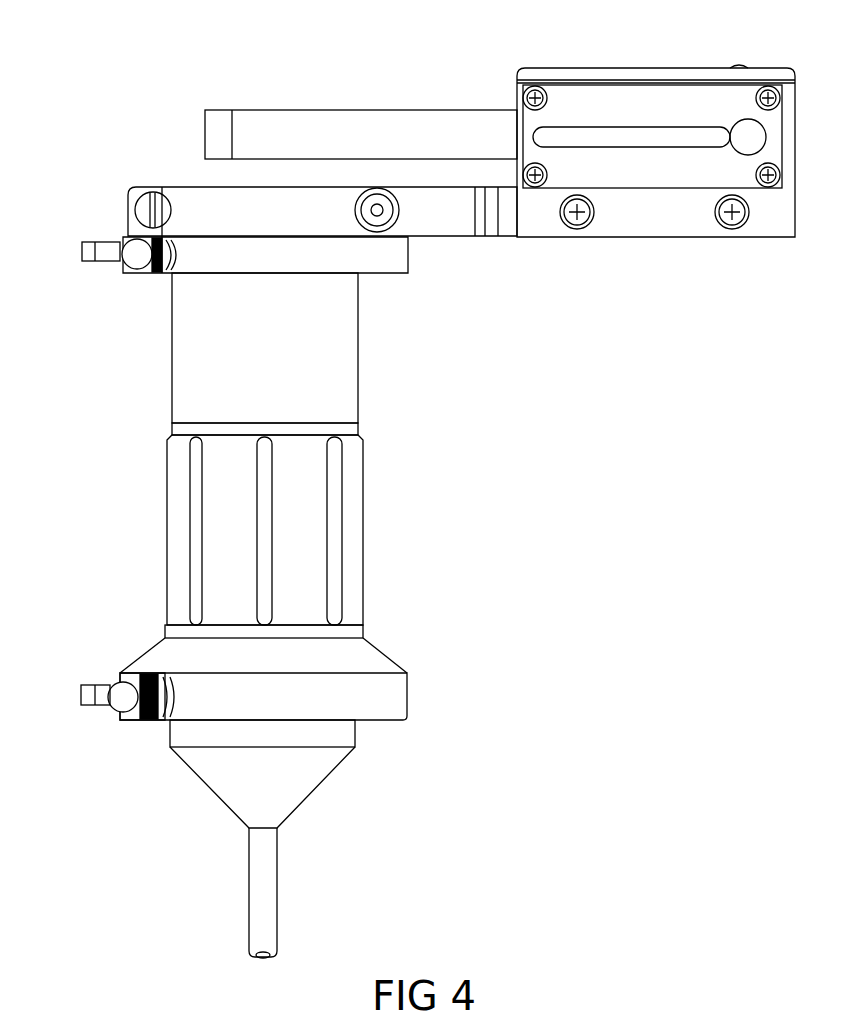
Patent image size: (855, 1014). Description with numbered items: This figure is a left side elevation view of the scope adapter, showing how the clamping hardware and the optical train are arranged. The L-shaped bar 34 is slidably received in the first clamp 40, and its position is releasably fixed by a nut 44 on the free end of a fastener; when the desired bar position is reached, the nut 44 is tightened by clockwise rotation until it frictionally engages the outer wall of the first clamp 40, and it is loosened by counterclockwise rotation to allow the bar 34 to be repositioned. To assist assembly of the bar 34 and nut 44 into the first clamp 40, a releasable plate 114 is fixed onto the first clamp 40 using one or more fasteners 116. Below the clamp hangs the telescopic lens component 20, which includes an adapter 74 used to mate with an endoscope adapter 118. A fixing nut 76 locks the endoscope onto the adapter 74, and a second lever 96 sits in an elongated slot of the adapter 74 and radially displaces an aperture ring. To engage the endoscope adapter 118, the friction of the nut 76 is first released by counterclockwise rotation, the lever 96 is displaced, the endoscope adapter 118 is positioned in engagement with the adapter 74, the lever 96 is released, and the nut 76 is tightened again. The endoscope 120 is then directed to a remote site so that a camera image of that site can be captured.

The telescopic lens component 20 is at (392, 357).
The L-shaped bar 34 is at (325, 118).
The first clamp 40 is at (770, 217).
The nut 44 is at (748, 135).
The adapter 74 is at (388, 697).
The fixing nut 76 is at (118, 702).
The second lever 96 is at (82, 690).
The releasable plate 114 is at (648, 75).
The fasteners 116 is at (530, 83).
The endoscope adapter 118 is at (305, 785).
The endoscope 120 is at (268, 882).